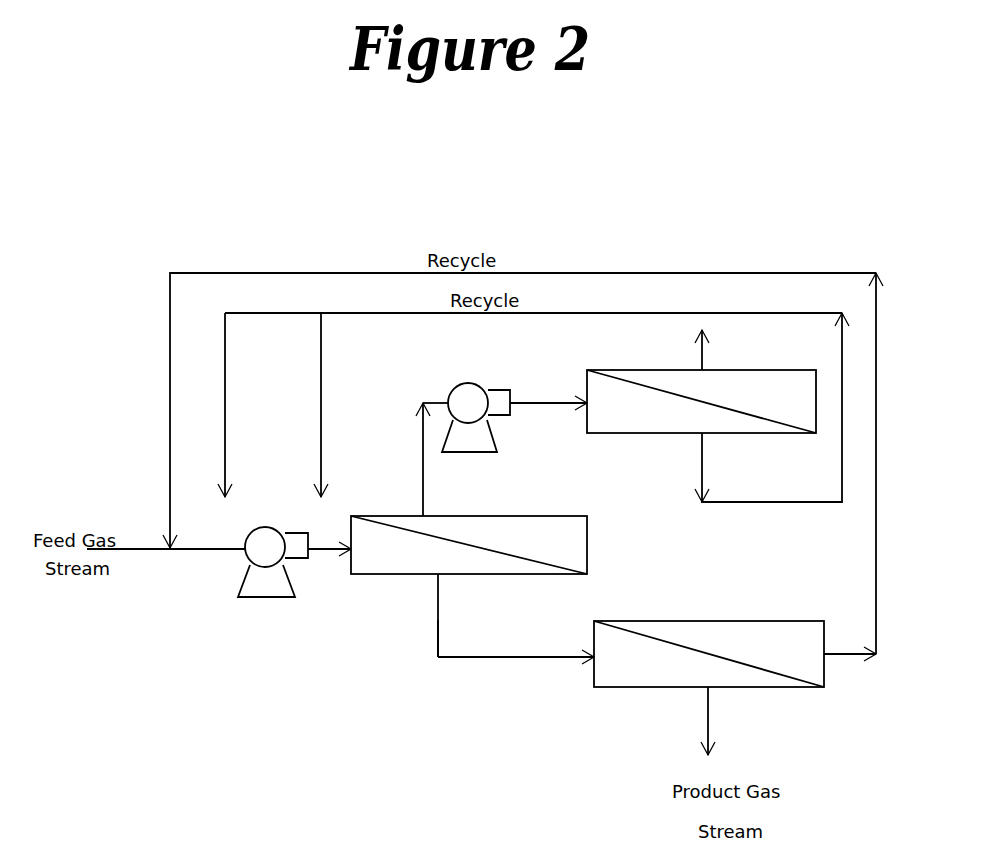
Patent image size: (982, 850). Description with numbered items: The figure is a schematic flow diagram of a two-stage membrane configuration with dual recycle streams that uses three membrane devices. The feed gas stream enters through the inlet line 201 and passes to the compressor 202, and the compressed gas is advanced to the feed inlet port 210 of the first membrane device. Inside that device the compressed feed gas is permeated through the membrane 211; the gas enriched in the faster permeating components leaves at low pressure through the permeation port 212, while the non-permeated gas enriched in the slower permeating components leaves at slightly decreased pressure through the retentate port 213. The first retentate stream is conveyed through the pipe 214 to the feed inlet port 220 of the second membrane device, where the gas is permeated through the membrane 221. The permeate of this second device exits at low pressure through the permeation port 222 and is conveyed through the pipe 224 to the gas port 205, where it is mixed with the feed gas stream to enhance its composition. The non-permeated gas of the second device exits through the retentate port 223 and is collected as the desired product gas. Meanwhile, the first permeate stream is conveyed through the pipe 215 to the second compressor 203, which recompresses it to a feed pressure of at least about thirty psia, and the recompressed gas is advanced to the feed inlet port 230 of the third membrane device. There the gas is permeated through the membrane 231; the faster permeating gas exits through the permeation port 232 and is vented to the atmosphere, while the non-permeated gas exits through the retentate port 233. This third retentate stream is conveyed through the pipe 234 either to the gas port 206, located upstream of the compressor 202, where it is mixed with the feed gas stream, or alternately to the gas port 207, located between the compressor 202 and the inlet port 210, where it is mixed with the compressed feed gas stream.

The inlet line 201 is at (152, 549).
The compressor 202 is at (273, 562).
The second compressor 203 is at (476, 417).
The gas port 205 is at (519, 410).
The gas port 206 is at (244, 405).
The gas port 207 is at (336, 405).
The feed inlet port 210 is at (329, 564).
The membrane 211 is at (469, 545).
The permeation port 212 is at (440, 459).
The retentate port 213 is at (462, 615).
The pipe 214 is at (438, 638).
The pipe 215 is at (423, 452).
The feed inlet port 220 is at (516, 671).
The membrane 221 is at (709, 654).
The permeation port 222 is at (850, 646).
The retentate port 223 is at (728, 721).
The pipe 224 is at (877, 520).
The feed inlet port 230 is at (548, 416).
The membrane 231 is at (701, 401).
The permeation port 232 is at (720, 350).
The retentate port 233 is at (772, 407).
The pipe 234 is at (568, 313).